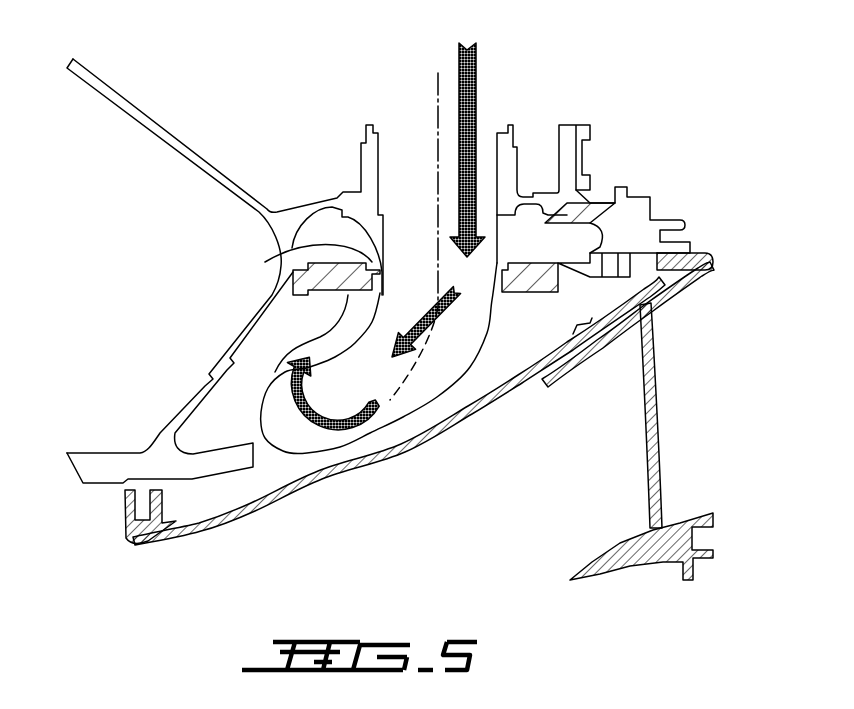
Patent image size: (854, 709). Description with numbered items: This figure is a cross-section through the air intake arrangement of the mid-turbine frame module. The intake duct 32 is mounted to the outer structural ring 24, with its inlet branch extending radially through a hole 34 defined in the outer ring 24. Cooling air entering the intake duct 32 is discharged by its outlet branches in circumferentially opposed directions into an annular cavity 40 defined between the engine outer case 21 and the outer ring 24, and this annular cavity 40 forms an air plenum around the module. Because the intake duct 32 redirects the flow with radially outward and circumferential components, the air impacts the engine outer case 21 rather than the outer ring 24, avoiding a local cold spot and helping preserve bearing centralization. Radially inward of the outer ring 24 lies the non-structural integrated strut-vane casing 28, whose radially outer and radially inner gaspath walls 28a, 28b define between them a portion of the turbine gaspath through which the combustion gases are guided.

The engine outer case 21 is at (292, 213).
The outer structural ring 24 is at (613, 210).
The integrated strut-vane (ISV) casing 28 is at (660, 413).
The radially outer gaspath wall 28a is at (303, 488).
The radially inner gaspath wall 28b is at (588, 563).
The intake duct 32 is at (443, 362).
The hole 34 is at (292, 251).
The annular cavity 40 is at (553, 243).